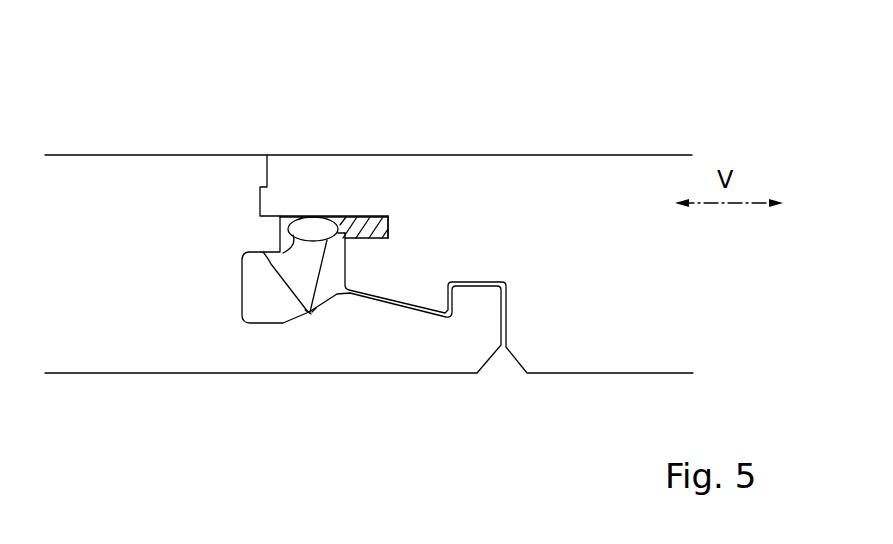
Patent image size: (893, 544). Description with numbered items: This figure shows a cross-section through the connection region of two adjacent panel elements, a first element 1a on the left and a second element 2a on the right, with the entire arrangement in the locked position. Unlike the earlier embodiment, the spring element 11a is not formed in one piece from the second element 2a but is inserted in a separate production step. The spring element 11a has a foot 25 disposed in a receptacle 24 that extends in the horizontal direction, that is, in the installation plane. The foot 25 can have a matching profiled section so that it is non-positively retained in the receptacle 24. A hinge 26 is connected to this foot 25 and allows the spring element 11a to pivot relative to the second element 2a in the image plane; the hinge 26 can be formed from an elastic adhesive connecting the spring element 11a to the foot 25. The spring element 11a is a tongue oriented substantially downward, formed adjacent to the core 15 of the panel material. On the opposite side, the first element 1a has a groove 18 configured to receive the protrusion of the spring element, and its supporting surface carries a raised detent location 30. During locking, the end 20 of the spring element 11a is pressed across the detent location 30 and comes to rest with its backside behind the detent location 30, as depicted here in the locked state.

The first element 1a is at (95, 183).
The second element 2a is at (547, 178).
The spring element 11a is at (289, 265).
The core 15 is at (612, 258).
The groove 18 is at (258, 303).
The end 20 is at (309, 307).
The receptacle 24 is at (390, 233).
The foot 25 is at (358, 227).
The hinge 26 is at (312, 227).
The detent location 30 is at (316, 304).